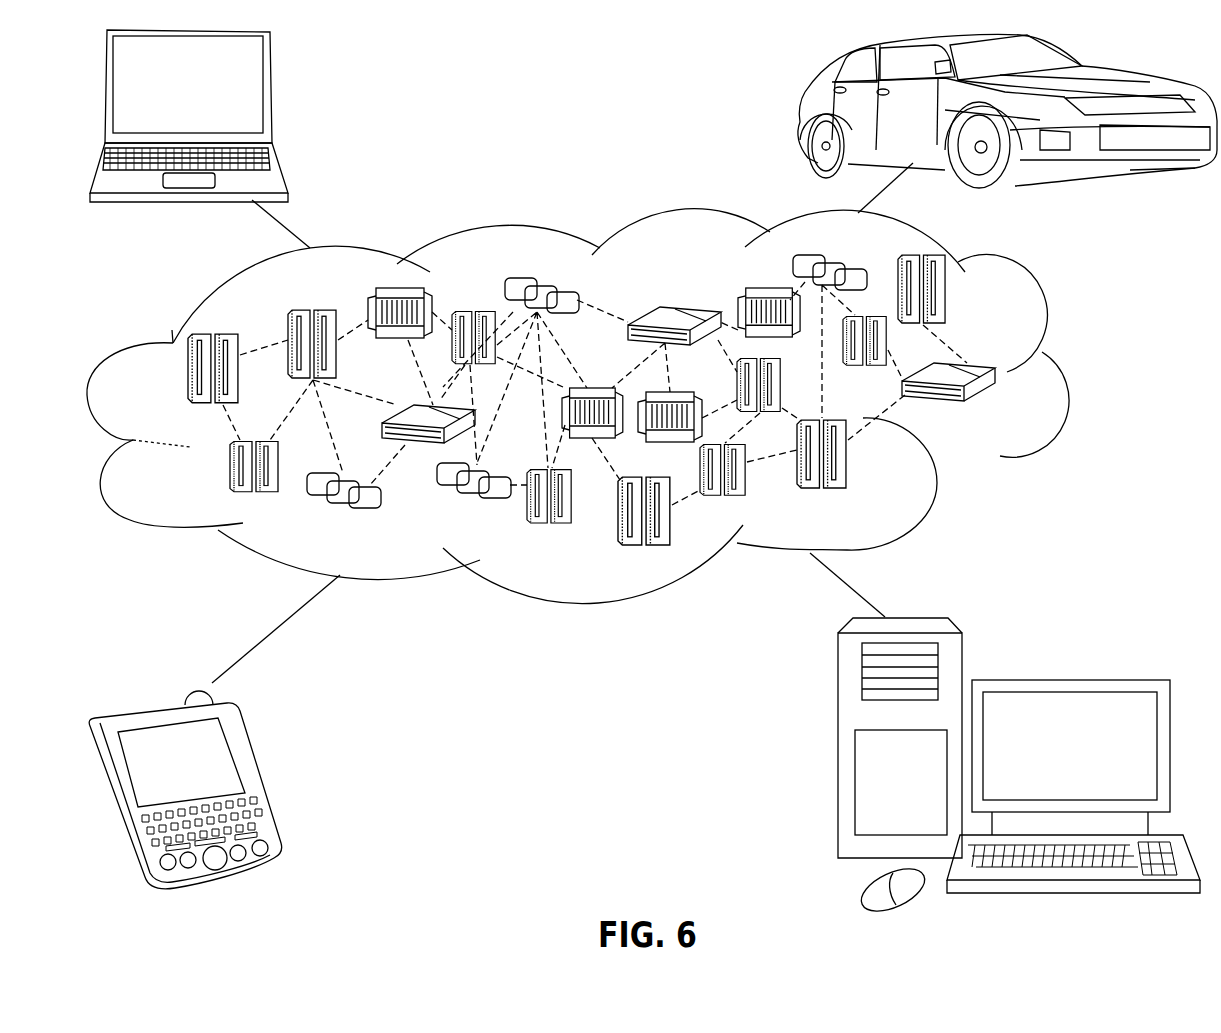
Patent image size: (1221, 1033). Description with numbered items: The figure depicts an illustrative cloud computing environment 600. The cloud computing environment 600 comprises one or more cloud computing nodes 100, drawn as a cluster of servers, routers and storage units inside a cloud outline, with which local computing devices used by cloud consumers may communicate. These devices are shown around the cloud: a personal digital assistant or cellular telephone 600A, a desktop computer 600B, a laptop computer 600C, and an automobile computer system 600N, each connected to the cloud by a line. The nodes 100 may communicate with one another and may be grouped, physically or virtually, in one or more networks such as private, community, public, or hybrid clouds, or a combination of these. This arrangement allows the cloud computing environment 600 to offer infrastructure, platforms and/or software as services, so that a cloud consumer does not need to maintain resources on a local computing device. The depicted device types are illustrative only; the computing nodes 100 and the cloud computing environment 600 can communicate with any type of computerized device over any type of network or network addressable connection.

The cloud computing nodes 100 is at (1012, 416).
The cloud computing environment 600 is at (1065, 377).
The personal digital assistant (PDA) or cellular telephone 600A is at (257, 778).
The desktop computer 600B is at (1067, 680).
The laptop computer 600C is at (276, 93).
The automobile computer system 600N is at (795, 106).